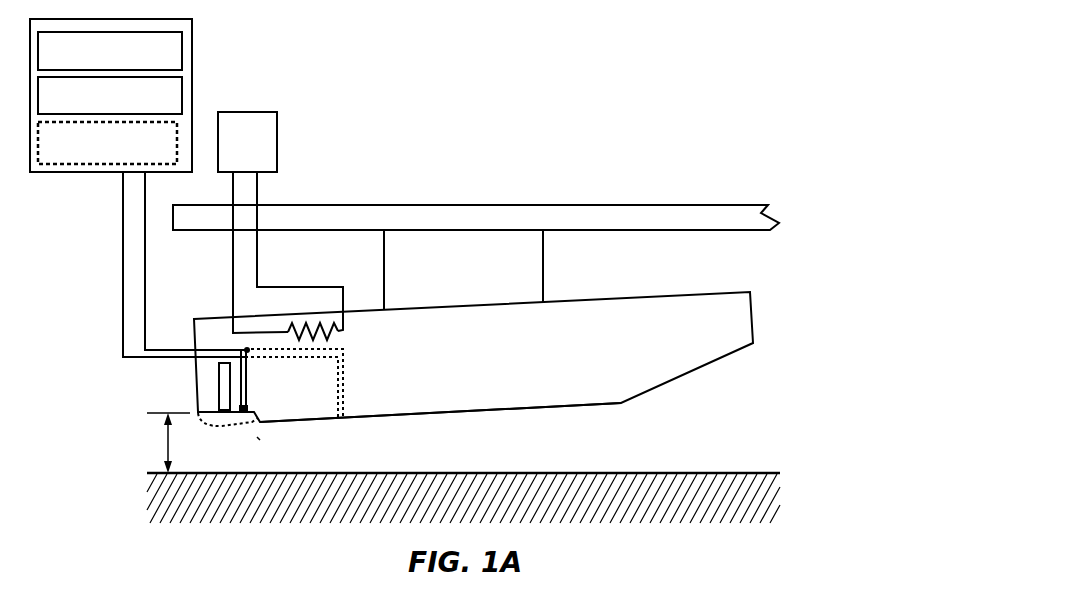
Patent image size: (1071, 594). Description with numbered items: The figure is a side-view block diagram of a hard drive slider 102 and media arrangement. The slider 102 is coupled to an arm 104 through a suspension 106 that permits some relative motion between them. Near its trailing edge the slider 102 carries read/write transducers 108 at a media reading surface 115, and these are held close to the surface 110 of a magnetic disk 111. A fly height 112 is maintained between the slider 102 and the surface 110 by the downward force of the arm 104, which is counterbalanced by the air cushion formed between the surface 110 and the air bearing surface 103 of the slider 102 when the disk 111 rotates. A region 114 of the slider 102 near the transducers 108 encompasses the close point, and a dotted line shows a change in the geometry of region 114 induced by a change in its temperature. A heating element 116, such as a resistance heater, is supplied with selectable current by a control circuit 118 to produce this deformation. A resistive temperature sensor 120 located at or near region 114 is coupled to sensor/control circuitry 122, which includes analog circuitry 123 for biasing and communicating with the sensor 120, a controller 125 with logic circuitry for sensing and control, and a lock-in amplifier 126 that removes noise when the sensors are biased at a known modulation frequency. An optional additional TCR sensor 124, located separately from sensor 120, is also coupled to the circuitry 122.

The slider 102 is at (658, 302).
The air bearing surface 103 is at (472, 408).
The arm 104 is at (705, 212).
The suspension 106 is at (543, 262).
The read/write transducers 108 is at (222, 392).
The surface of magnetic recording medium 110 is at (662, 473).
The magnetic disk 111 is at (673, 510).
The fly height 112 is at (153, 443).
The close point region 114 is at (256, 436).
The media reading surface 115 is at (213, 418).
The heating element 116 is at (337, 333).
The control circuit 118 is at (267, 112).
The resistive temperature sensor 120 is at (247, 410).
The sensor/control circuitry 122 is at (97, 172).
The analog circuitry 123 is at (179, 53).
The TCR sensor 124 is at (345, 413).
The controller 125 is at (182, 83).
The lock-in amplifier 126 is at (155, 172).